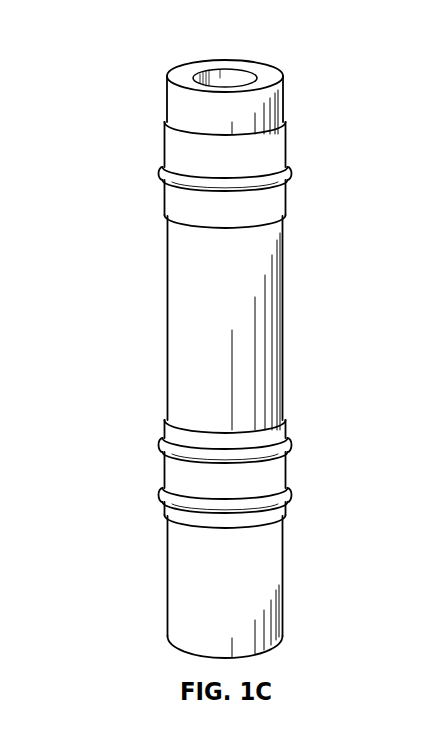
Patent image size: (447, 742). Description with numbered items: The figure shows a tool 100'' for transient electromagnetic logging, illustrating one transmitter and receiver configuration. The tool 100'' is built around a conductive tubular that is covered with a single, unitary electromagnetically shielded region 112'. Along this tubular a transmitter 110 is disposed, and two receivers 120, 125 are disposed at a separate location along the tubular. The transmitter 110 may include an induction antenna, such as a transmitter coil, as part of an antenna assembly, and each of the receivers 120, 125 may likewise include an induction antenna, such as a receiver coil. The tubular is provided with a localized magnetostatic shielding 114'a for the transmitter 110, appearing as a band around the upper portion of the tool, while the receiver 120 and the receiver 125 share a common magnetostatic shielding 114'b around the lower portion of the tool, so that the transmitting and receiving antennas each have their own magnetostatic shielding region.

The tool 100'' is at (161, 344).
The electromagnetically shielded region 112' is at (260, 169).
The localized magnetostatic shielding 114'a is at (181, 134).
The transmitter 110 is at (285, 173).
The receiver 120 is at (284, 446).
The magnetostatic shielding 114'b is at (178, 452).
The receiver 125 is at (284, 496).